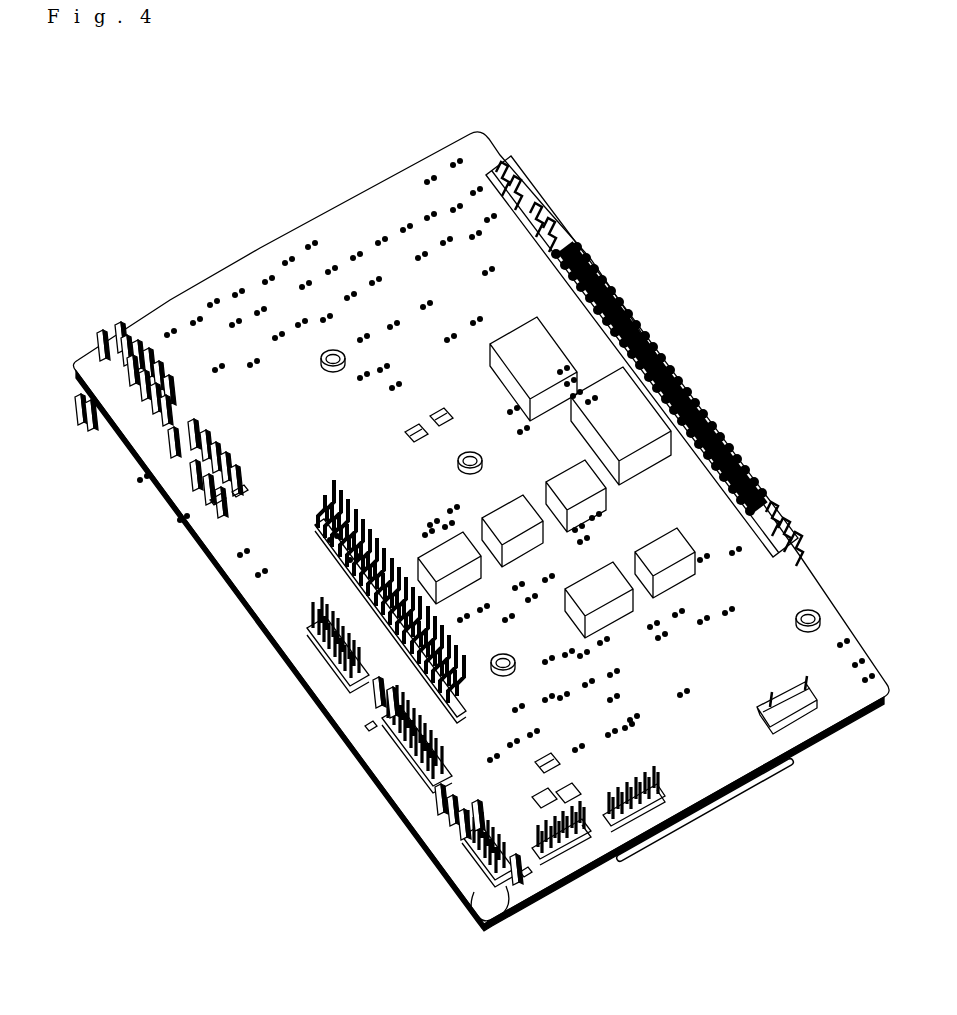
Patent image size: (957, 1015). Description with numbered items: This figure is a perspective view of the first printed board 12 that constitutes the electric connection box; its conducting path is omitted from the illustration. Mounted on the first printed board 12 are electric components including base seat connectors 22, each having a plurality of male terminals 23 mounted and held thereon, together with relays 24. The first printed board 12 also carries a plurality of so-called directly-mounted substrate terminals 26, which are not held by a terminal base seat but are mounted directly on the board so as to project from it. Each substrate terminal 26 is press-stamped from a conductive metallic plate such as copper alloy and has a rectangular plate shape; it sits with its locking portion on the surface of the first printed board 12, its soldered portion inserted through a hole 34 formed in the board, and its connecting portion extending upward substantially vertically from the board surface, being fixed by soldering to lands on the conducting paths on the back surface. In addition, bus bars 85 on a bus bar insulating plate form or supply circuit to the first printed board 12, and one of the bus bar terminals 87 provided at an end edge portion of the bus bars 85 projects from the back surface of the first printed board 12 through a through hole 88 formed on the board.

The first printed board 12 is at (490, 127).
The base seat connector 22 is at (569, 232).
The male terminal 23 is at (340, 495).
The relay 24 is at (490, 397).
The substrate terminal 26 is at (122, 316).
The hole 34 is at (565, 892).
The bus bar 85 is at (487, 930).
The bus bar terminal 87 is at (477, 906).
The through hole 88 is at (503, 896).